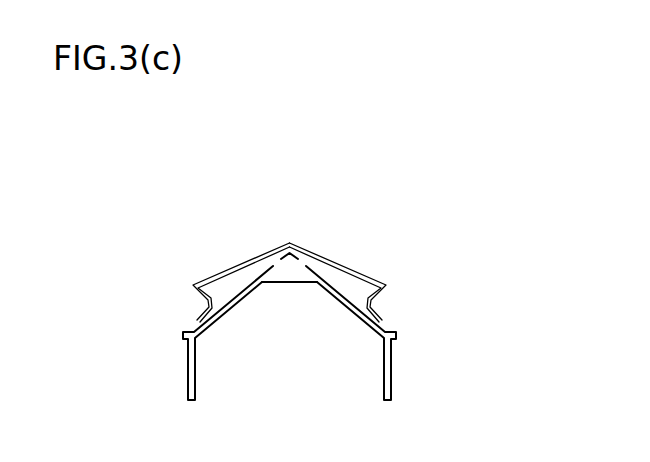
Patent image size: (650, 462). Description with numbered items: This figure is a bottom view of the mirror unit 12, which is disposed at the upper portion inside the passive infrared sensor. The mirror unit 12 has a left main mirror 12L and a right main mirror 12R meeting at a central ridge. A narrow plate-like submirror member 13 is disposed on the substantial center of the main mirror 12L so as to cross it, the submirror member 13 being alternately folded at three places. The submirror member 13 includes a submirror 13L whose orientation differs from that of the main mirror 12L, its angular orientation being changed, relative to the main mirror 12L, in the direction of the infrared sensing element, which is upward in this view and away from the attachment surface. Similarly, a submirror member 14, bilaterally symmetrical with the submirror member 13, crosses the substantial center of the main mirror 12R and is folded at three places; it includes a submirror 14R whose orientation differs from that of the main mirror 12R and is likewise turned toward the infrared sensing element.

The mirror unit 12 is at (299, 242).
The main mirror 12L is at (186, 280).
The main mirror 12R is at (403, 282).
The left side-use submirror member 13 is at (225, 241).
The submirror 13L is at (201, 305).
The right side-use submirror member 14 is at (372, 243).
The submirror 14R is at (378, 305).